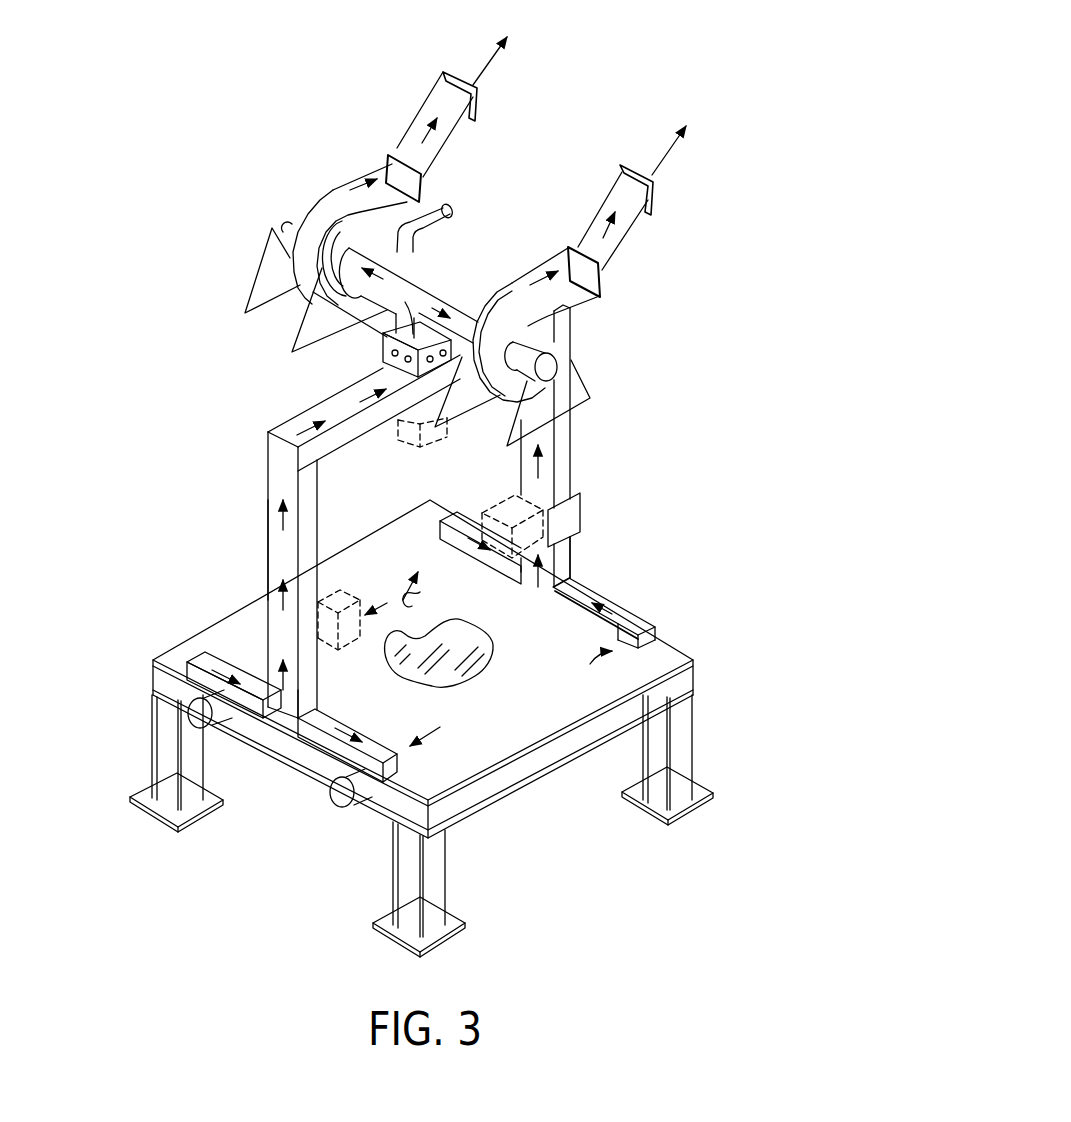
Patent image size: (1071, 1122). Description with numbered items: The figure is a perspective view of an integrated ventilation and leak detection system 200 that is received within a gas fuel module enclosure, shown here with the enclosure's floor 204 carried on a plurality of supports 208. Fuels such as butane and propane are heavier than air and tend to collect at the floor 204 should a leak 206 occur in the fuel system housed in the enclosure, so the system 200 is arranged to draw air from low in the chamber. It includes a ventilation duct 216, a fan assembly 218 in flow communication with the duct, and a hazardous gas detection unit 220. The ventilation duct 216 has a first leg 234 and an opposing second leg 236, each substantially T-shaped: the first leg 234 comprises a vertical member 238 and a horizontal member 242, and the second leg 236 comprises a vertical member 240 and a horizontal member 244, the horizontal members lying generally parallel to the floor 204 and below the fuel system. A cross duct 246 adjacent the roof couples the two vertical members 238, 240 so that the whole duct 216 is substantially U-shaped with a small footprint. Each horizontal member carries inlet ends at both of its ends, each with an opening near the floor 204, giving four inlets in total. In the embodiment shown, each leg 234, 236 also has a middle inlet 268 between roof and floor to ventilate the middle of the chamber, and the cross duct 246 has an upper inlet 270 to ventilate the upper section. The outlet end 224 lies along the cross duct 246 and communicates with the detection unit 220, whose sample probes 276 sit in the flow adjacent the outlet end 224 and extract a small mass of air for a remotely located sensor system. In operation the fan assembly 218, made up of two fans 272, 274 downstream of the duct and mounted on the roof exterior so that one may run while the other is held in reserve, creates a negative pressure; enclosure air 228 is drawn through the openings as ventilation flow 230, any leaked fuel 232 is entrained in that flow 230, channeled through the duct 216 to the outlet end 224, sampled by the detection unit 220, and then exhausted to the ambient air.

The integrated ventilation and leak detection system 200 is at (663, 73).
The floor 204 is at (570, 700).
The leak 206 is at (472, 619).
The supports 208 is at (153, 745).
The ventilation duct 216 is at (266, 562).
The fan assembly 218 is at (465, 167).
The hazardous gas detection unit 220 is at (254, 305).
The outlet end 224 is at (392, 368).
The air 228 is at (256, 632).
The ventilation flow 230 is at (283, 527).
The fuel 232 is at (412, 606).
The first leg 234 is at (250, 467).
The second leg 236 is at (602, 479).
The vertical member 238 is at (306, 690).
The vertical member 240 is at (572, 553).
The horizontal member 242 is at (237, 708).
The horizontal member 244 is at (612, 597).
The cross duct 246 is at (306, 411).
The middle inlet 268 is at (348, 647).
The upper inlet 270 is at (436, 442).
The fan 272 is at (333, 190).
The fan 274 is at (602, 288).
The sample probe 276 is at (470, 320).